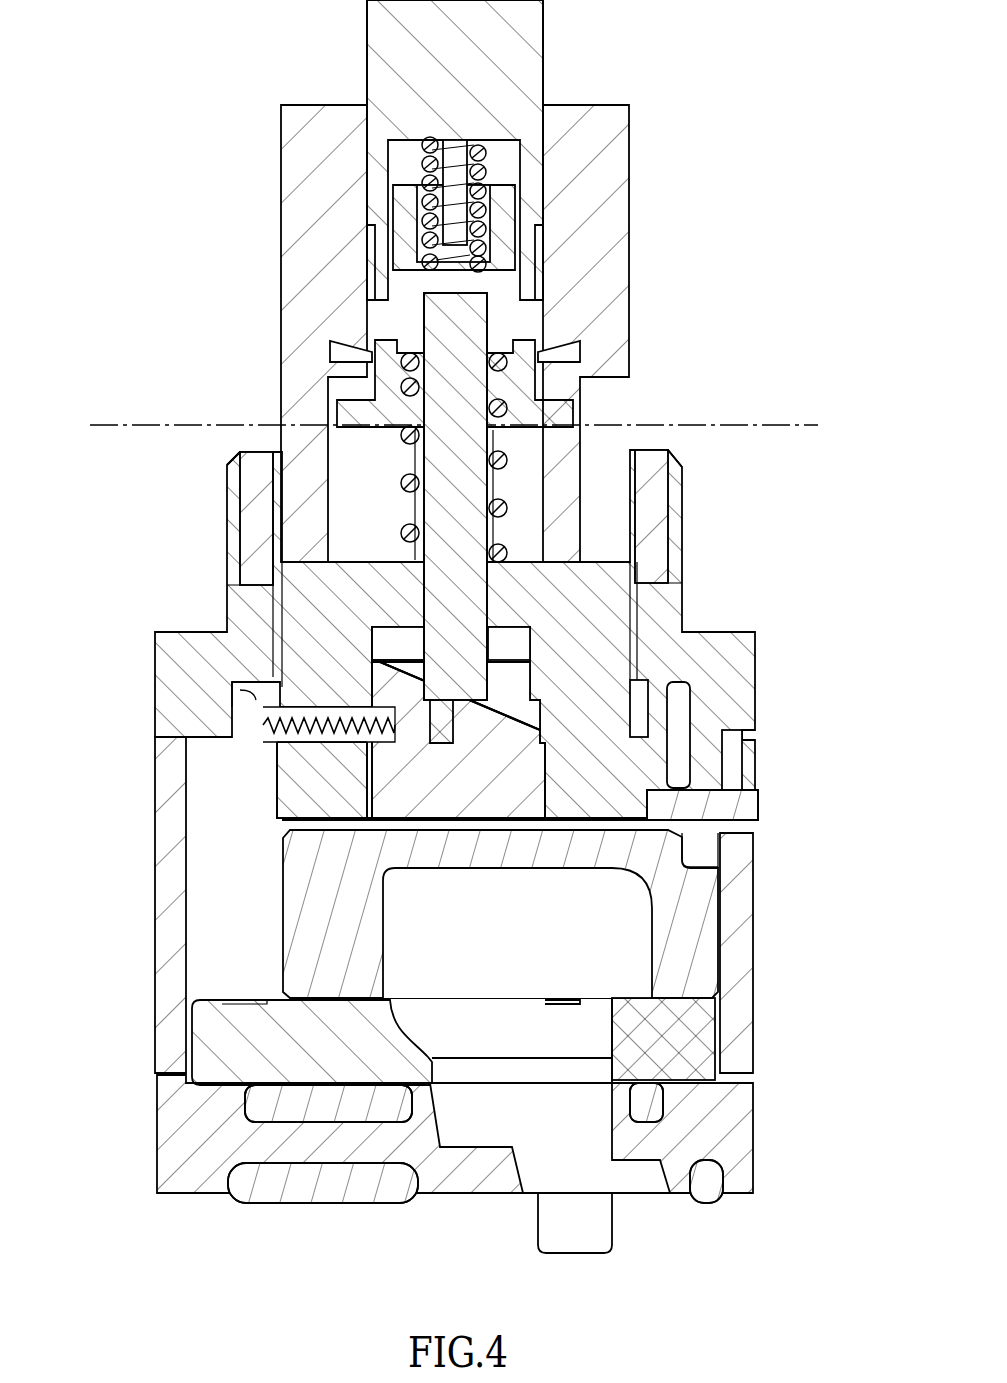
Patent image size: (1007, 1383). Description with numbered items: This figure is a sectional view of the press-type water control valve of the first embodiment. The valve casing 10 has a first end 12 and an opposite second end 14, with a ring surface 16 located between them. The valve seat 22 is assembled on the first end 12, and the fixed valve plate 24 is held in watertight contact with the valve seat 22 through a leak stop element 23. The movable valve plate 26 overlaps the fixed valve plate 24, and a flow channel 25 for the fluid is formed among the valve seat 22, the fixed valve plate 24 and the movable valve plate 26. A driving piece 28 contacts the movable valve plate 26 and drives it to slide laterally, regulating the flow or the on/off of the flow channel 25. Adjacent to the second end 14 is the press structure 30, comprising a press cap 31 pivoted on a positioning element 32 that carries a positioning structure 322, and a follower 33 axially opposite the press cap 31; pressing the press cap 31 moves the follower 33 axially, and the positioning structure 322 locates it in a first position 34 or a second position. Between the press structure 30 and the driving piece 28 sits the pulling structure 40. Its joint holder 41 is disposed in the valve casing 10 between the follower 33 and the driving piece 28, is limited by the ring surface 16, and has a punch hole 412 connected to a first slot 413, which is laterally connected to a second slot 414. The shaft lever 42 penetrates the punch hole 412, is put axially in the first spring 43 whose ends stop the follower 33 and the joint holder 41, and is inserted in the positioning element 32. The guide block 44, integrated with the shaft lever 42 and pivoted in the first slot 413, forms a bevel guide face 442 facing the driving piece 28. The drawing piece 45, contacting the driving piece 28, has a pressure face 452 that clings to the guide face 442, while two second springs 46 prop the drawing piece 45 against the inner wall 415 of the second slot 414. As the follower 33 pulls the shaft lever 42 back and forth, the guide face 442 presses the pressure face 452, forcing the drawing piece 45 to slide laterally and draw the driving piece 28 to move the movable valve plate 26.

The valve casing 10 is at (434, 905).
The first end 12 is at (737, 1082).
The second end 14 is at (653, 449).
The ring surface 16 is at (250, 690).
The valve seat 22 is at (437, 1164).
The leak stop element 23 is at (273, 1093).
The fixed valve plate 24 is at (233, 1053).
The flow channel 25 is at (577, 1040).
The movable valve plate 26 is at (307, 943).
The driving piece 28 is at (617, 768).
The press structure 30 is at (370, 281).
The press cap 31 is at (370, 45).
The positioning element 32 is at (283, 180).
The positioning structure 322 is at (360, 268).
The follower 33 is at (385, 355).
The first position 34 is at (147, 413).
The pulling structure 40 is at (439, 582).
The joint holder 41 is at (603, 575).
The punch hole 412 is at (493, 605).
The first slot 413 is at (392, 638).
The second slot 414 is at (307, 737).
The inner wall 415 is at (277, 747).
The shaft lever 42 is at (470, 385).
The first spring 43 is at (503, 503).
The guide block 44 is at (451, 704).
The guide face 442 is at (393, 668).
The drawing piece 45 is at (530, 783).
The pressure face 452 is at (520, 705).
The second spring 46 is at (262, 722).